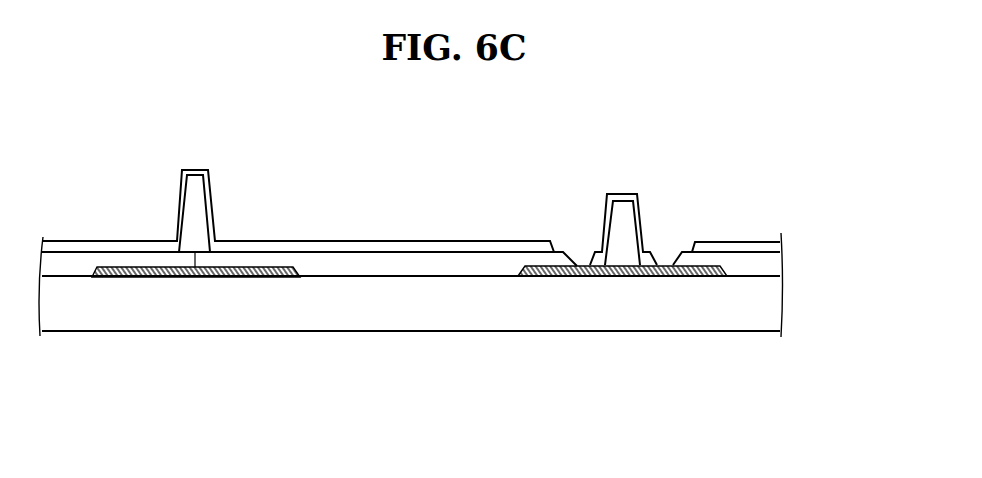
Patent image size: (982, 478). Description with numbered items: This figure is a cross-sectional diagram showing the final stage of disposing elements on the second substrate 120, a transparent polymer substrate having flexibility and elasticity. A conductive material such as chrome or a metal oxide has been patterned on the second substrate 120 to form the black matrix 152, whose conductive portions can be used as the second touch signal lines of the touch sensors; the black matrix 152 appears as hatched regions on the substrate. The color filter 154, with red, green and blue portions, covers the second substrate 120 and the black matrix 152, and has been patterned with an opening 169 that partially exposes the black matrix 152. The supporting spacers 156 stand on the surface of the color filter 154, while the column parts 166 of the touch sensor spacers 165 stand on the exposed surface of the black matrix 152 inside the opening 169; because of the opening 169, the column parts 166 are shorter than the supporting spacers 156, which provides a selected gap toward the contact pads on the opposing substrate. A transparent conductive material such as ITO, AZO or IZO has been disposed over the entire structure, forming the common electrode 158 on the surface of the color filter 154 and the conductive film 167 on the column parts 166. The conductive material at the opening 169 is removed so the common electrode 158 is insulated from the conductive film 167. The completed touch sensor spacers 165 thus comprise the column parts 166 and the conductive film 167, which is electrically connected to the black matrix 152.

The second substrate 120 is at (772, 310).
The black matrix 152 is at (152, 273).
The color filter 154 is at (772, 267).
The supporting spacers 156 is at (192, 187).
The common electrode 158 is at (375, 247).
The touch sensor spacers 165 is at (647, 124).
The column parts 166 is at (622, 204).
The conductive film 167 is at (605, 210).
The opening 169 is at (670, 252).